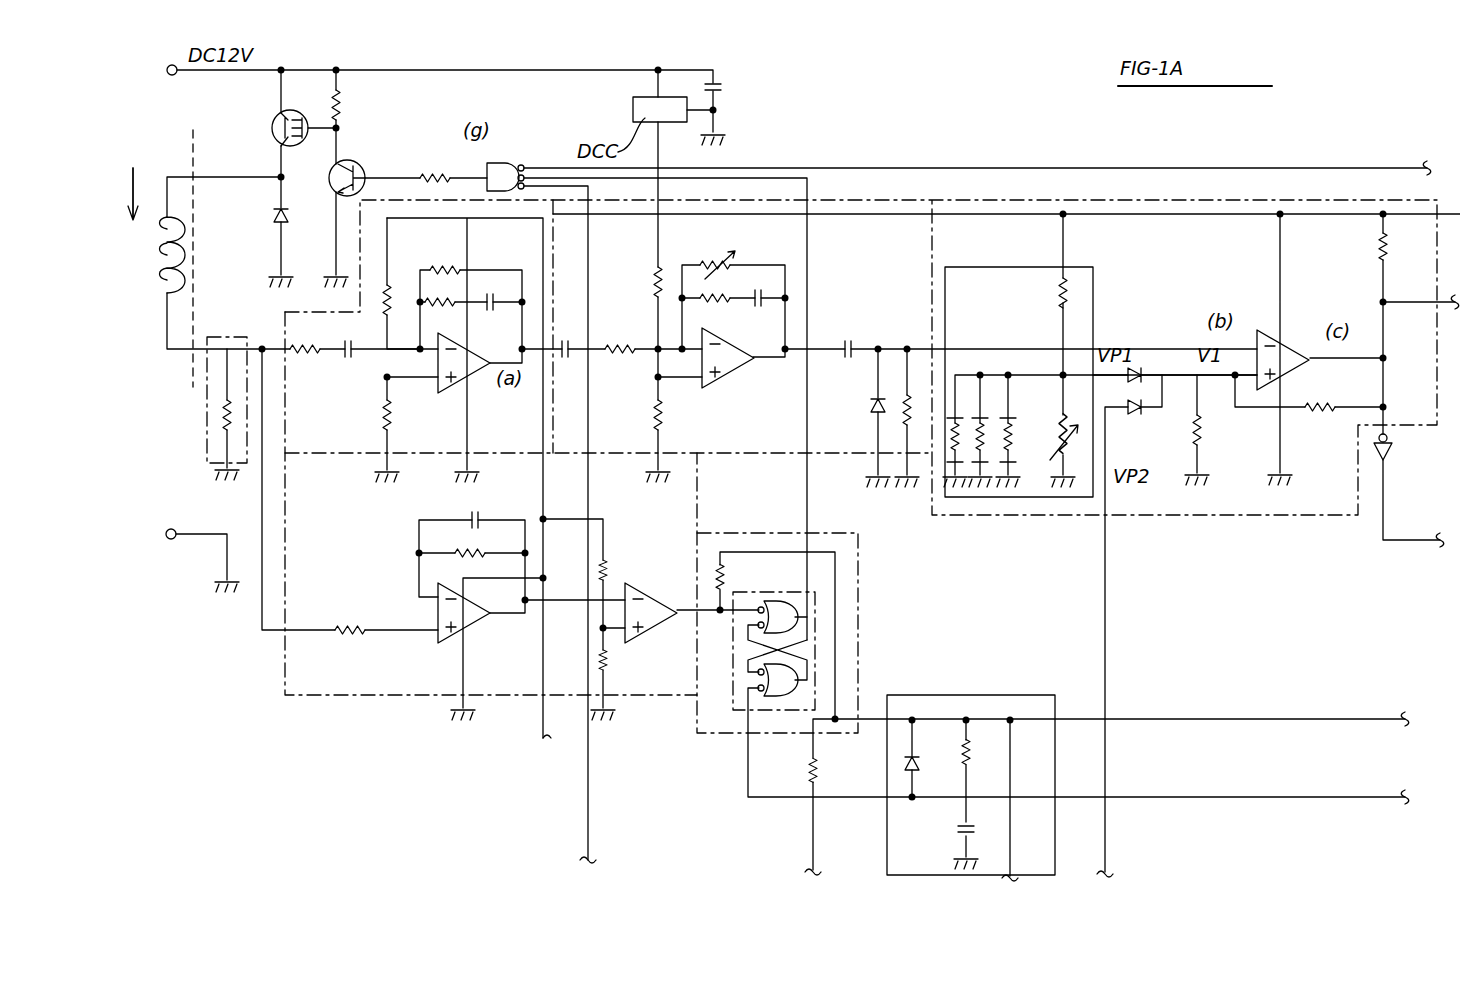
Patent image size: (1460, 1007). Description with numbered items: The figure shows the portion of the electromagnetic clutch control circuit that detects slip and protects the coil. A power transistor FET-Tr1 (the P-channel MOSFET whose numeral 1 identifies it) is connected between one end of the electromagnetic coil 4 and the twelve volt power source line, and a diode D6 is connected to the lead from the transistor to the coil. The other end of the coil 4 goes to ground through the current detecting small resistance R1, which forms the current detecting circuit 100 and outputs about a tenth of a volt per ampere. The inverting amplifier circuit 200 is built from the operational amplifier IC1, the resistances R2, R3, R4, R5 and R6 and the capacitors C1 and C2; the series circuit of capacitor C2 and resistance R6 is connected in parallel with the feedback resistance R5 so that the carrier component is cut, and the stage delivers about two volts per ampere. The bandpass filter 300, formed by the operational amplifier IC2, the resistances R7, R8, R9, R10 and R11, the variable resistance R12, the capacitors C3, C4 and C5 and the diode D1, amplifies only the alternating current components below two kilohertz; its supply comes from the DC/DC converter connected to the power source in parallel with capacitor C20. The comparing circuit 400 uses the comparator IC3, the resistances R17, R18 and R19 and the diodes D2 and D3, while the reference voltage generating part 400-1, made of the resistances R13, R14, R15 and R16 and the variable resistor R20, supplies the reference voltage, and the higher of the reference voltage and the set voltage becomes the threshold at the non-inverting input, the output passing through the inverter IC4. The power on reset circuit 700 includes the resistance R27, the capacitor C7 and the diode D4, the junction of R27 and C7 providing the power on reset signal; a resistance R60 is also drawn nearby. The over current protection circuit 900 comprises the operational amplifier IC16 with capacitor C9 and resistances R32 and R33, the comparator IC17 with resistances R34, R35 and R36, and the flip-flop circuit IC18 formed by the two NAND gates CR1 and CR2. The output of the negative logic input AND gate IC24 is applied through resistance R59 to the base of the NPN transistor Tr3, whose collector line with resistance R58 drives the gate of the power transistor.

The power transistor FET Tr1 / switching transistor 1 is at (134, 179).
The electromagnetic coil 4 is at (163, 268).
The current detecting circuit 100 is at (207, 440).
The inverting amplifier circuit 200 is at (362, 202).
The bandpass filter 300 is at (850, 200).
The comparing circuit 400 is at (1160, 200).
The reference voltage generating part 400-1 is at (1015, 267).
The power on reset circuit 700 is at (990, 695).
The over current protection circuit 900 is at (285, 668).
The power transistor FET-Tr1 is at (222, 126).
The NPN transistor Tr3 is at (351, 165).
The diode D6 is at (260, 229).
The resistance R58 is at (357, 102).
The resistance R59 is at (433, 163).
The negative logic input AND gate IC24 is at (500, 168).
The capacitor C20 is at (737, 86).
The current detecting small resistance R1 is at (227, 420).
The resistance R2 is at (305, 364).
The capacitor C1 is at (349, 362).
The resistance R3 is at (399, 308).
The resistance R4 is at (405, 417).
The feedback resistance R5 is at (439, 254).
The resistance R6 is at (440, 314).
The capacitor C2 is at (484, 314).
The operational amplifier IC1 is at (482, 390).
The capacitor C3 is at (564, 365).
The resistance R7 is at (620, 332).
The resistance R8 is at (637, 282).
The resistance R9 is at (637, 417).
The resistance R10 is at (715, 309).
The variable resistance R12 is at (718, 254).
The capacitor C4 is at (753, 315).
The operational amplifier IC2 is at (724, 383).
The capacitor C5 is at (848, 334).
The diode D1 is at (858, 393).
The resistance R11 is at (907, 432).
The resistance R16 is at (1033, 294).
The variable resistor R20 is at (1046, 423).
The resistance R13 is at (955, 460).
The resistance R14 is at (980, 460).
The resistance R15 is at (1008, 460).
The diode D2 is at (1135, 372).
The diode D3 is at (1141, 420).
The resistance R17 is at (1221, 436).
The resistance R18 is at (1311, 425).
The comparator IC3 is at (1285, 345).
The resistance R19 is at (1401, 262).
The inverter IC4 is at (1390, 455).
The capacitor C9 is at (492, 509).
The resistance R33 is at (425, 530).
The resistance R32 is at (351, 614).
The operational amplifier IC16 is at (468, 630).
The resistance R34 is at (627, 555).
The resistance R35 is at (626, 666).
The resistance R36 is at (693, 577).
The comparator IC17 is at (660, 620).
The flip-flop circuit IC18 is at (768, 592).
The NAND gate CR1 is at (795, 605).
The NAND gate CR2 is at (792, 665).
The resistor R60 is at (835, 770).
The diode D4 is at (926, 774).
The resistance R27 is at (970, 750).
The capacitor C7 is at (975, 840).